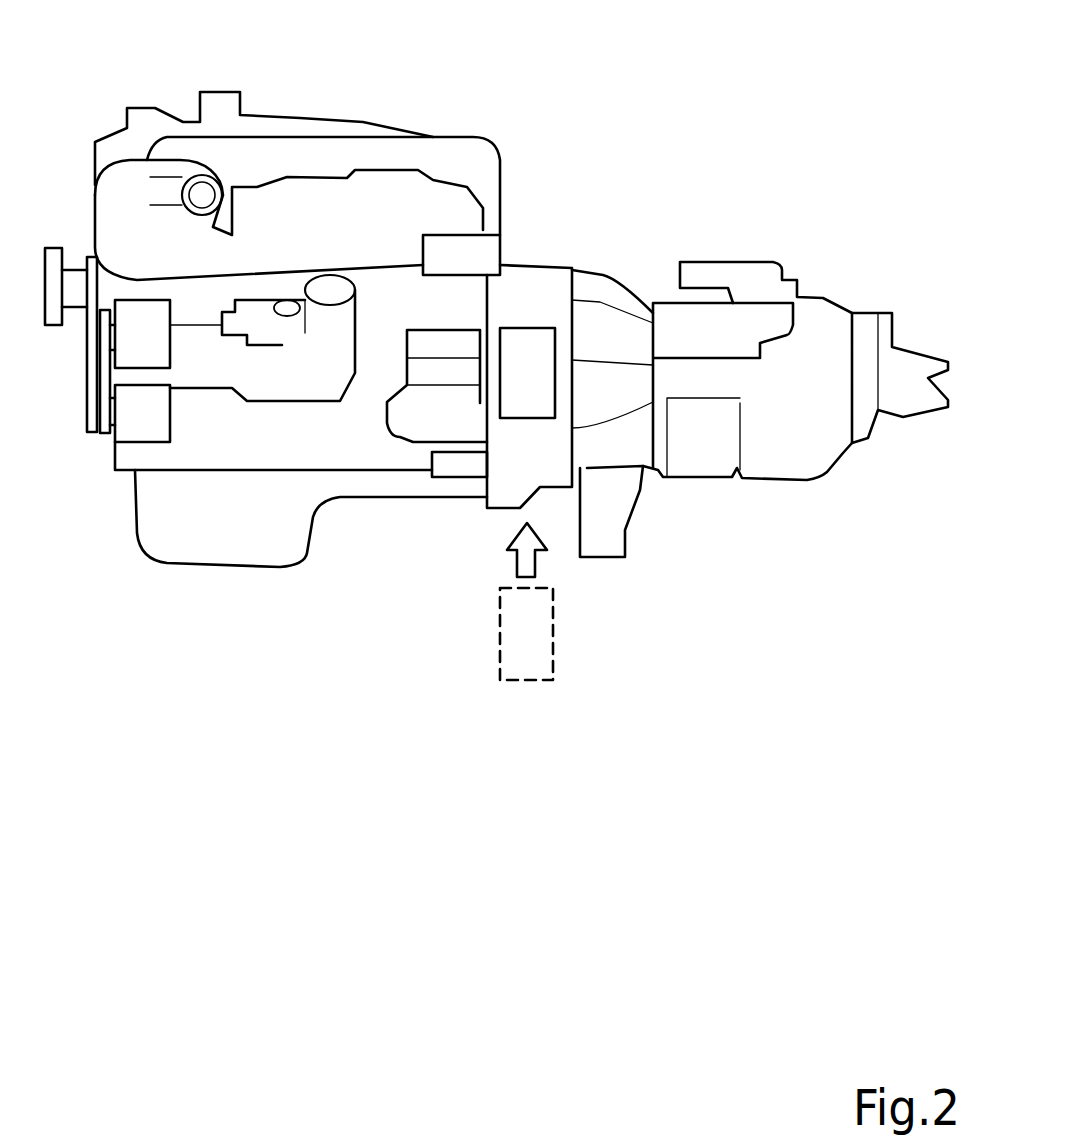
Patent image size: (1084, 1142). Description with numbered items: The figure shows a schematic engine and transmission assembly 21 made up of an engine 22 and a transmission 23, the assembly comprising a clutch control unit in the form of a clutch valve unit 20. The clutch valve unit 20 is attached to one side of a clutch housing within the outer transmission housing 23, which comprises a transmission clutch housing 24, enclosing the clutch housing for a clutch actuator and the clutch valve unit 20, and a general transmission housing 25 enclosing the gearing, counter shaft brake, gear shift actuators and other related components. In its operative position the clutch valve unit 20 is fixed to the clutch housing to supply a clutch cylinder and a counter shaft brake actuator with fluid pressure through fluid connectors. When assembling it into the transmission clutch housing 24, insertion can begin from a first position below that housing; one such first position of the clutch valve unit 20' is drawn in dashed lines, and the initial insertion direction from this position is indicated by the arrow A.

The clutch valve unit 20 is at (560, 293).
The first position of the clutch valve unit 20' is at (583, 634).
The engine and transmission assembly 21 is at (370, 592).
The engine 22 is at (345, 128).
The transmission 23 is at (732, 228).
The transmission clutch housing 24 is at (522, 263).
The general transmission housing 25 is at (827, 340).
The arrow indicating insertion direction A is at (517, 560).